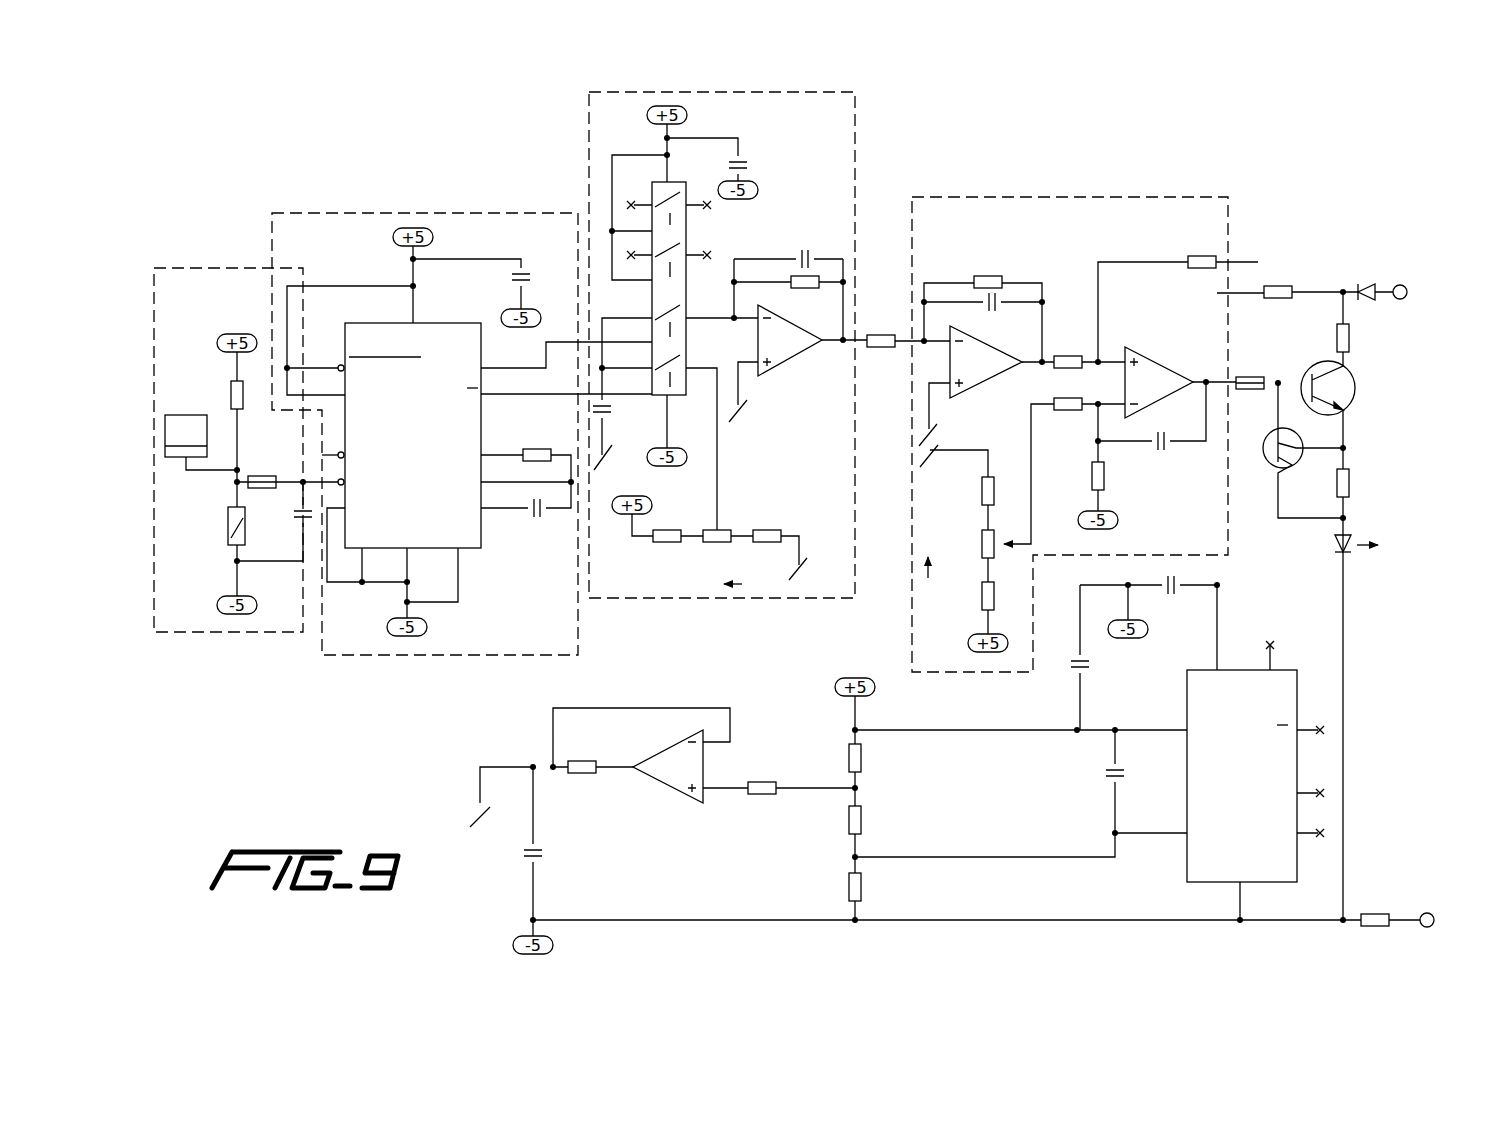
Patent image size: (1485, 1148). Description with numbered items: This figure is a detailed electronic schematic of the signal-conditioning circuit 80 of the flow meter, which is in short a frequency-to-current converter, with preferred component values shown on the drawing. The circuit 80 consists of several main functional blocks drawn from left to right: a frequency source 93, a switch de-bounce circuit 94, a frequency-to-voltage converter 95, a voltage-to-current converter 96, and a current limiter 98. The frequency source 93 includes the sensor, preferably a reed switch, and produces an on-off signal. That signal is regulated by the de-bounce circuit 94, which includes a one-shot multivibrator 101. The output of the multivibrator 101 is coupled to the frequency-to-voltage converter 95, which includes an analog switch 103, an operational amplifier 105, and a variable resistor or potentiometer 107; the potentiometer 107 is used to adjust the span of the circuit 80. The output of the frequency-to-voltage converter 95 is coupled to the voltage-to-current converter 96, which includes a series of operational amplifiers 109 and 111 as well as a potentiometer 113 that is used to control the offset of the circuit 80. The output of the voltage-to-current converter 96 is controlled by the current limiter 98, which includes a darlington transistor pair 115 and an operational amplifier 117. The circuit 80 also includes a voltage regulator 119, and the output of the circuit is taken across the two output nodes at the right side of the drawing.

The signal-conditioning circuit 80 is at (1308, 190).
The frequency source 93 is at (243, 270).
The switch de-bounce circuit 94 is at (483, 216).
The frequency-to-voltage converter 95 is at (828, 168).
The voltage-to-current converter 96 is at (1147, 214).
The current limiter 98 is at (485, 737).
The one-shot multivibrator 101 is at (482, 548).
The analog switch 103 is at (686, 398).
The operational amplifier 105 is at (780, 368).
The potentiometer 107 is at (752, 514).
The operational amplifier 109 is at (982, 378).
The operational amplifier 111 is at (1158, 362).
The potentiometer 113 is at (970, 614).
The darlington transistor pair 115 is at (1377, 433).
The operational amplifier 117 is at (675, 785).
The voltage regulator 119 is at (1360, 693).